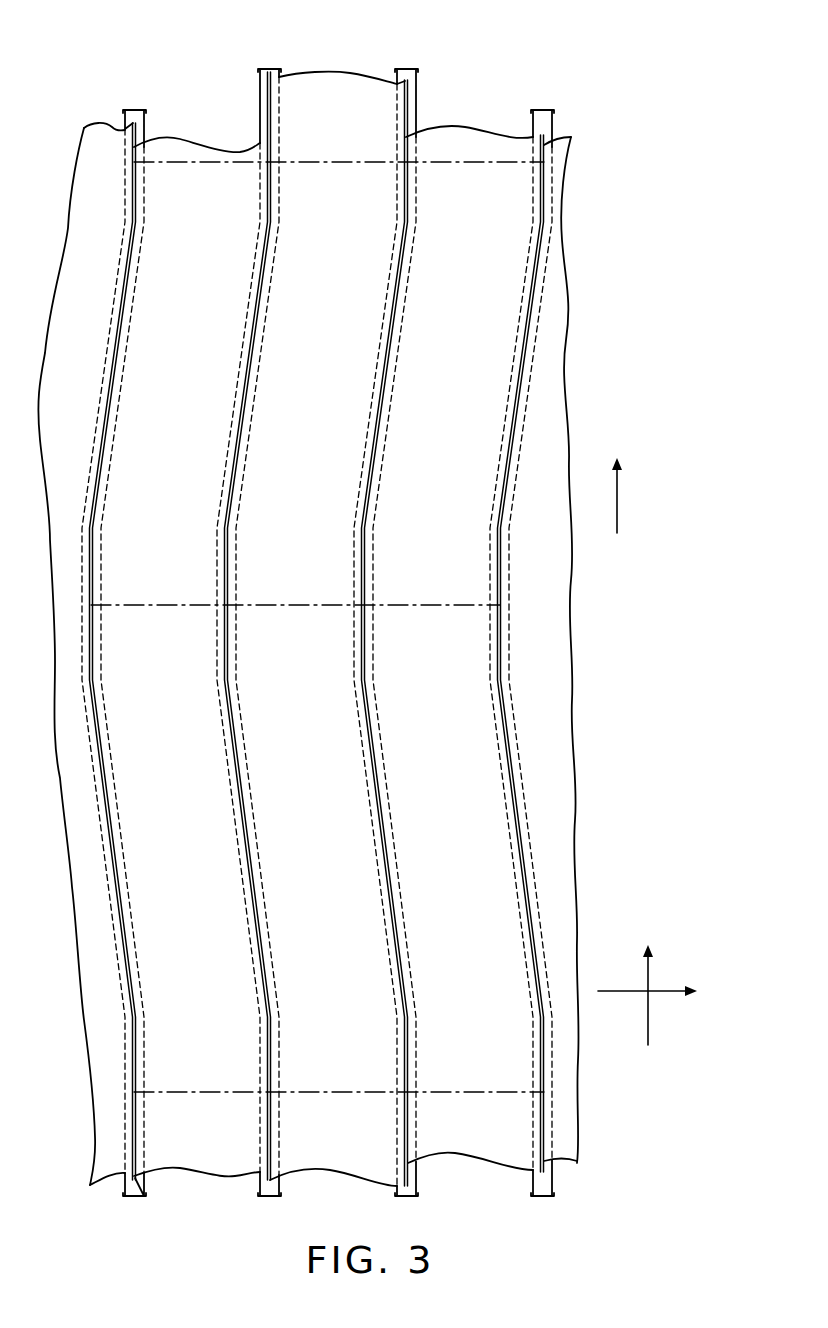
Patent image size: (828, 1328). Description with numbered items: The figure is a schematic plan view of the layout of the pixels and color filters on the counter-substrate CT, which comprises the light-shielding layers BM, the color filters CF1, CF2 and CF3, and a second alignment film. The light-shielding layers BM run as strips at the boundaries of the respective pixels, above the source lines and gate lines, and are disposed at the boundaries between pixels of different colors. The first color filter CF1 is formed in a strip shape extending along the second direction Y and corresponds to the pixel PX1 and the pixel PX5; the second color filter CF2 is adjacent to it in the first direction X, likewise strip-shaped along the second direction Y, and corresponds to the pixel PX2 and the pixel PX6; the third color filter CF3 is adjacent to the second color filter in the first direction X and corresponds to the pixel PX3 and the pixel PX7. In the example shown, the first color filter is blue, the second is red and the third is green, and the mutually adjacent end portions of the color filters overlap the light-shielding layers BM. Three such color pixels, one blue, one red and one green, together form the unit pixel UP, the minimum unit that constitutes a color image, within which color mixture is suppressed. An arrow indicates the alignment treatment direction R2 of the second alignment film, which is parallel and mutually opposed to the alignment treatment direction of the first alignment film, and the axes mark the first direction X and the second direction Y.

The light-shielding layer BM is at (133, 108).
The first color filter CF1 is at (197, 635).
The second color filter CF2 is at (333, 606).
The third color filter CF3 is at (469, 626).
The unit pixel UP is at (528, 151).
The counter-substrate CT is at (616, 251).
The pixel PX1 is at (177, 417).
The pixel PX2 is at (310, 417).
The pixel PX3 is at (446, 417).
The pixel PX5 is at (177, 857).
The pixel PX6 is at (310, 857).
The pixel PX7 is at (446, 857).
The alignment treatment direction R2 is at (667, 495).
The first direction X is at (656, 992).
The second direction Y is at (647, 980).